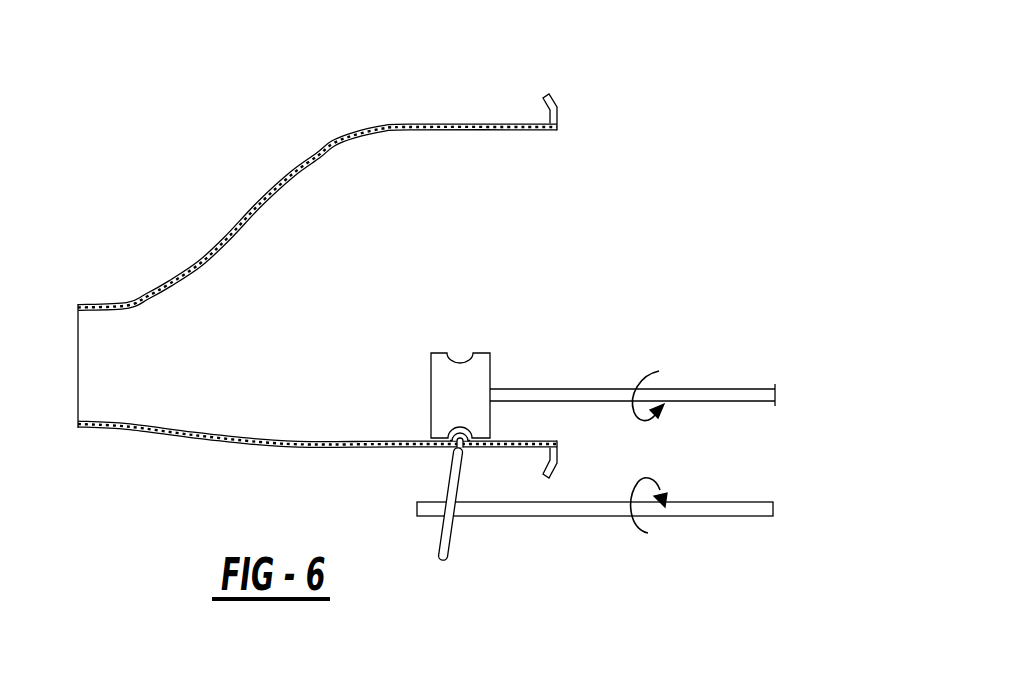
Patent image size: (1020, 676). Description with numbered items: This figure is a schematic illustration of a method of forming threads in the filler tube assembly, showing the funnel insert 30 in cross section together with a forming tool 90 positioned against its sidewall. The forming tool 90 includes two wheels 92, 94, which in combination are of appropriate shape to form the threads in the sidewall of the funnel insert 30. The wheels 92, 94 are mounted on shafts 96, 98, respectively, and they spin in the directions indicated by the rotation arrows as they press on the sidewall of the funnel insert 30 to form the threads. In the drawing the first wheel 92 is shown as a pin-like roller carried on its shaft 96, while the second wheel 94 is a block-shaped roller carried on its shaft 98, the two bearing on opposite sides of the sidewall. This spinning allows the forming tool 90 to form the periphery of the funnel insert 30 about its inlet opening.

The funnel insert 30 is at (352, 128).
The forming tool 90 is at (638, 484).
The wheel 92 is at (449, 537).
The wheel 94 is at (440, 391).
The shaft 96 is at (745, 512).
The shaft 98 is at (740, 392).